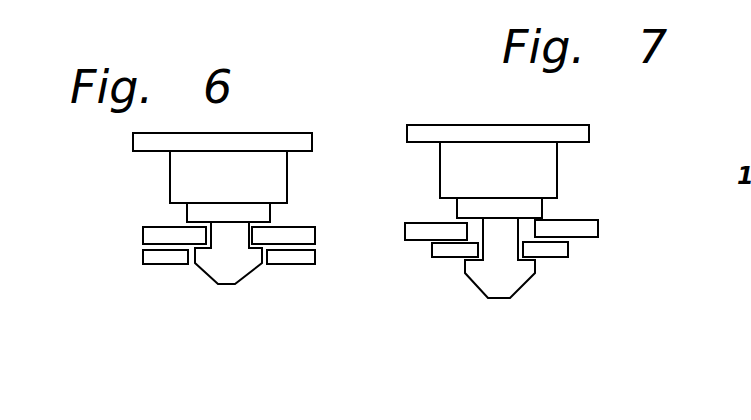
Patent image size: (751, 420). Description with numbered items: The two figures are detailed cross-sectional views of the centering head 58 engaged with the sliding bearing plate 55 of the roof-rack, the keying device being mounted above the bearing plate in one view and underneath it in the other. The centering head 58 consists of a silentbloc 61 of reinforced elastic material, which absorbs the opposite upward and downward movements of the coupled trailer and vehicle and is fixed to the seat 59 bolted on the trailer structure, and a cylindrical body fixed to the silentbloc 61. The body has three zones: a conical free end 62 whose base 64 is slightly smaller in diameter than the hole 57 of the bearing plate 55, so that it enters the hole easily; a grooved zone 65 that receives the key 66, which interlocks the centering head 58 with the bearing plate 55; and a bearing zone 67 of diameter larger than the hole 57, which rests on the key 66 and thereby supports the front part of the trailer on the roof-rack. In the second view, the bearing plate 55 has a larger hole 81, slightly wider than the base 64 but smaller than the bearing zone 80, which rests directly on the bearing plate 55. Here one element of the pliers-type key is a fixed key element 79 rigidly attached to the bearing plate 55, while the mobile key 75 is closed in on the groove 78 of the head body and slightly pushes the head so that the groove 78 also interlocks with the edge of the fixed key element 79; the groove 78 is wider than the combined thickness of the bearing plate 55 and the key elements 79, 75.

In FIG. 6, the centering head 58 is at (248, 103).
In FIG. 7, the centering head 58 is at (482, 102).
In FIG. 6, the seat 59 is at (270, 131).
In FIG. 7, the seat 59 is at (447, 125).
In FIG. 6, the silentbloc 61 is at (253, 173).
In FIG. 7, the silentbloc 61 is at (475, 169).
In FIG. 6, the bearing zone 67 is at (187, 218).
In FIG. 6, the key 66 is at (143, 233).
In FIG. 6, the grooved zone 65 is at (252, 237).
In FIG. 6, the bearing plate 55 is at (159, 265).
In FIG. 7, the bearing plate 55 is at (601, 234).
In FIG. 6, the hole 57 is at (193, 265).
In FIG. 6, the base 64 is at (230, 263).
In FIG. 7, the base 64 is at (498, 272).
In FIG. 6, the free end 62 is at (245, 283).
In FIG. 7, the free end 62 is at (477, 297).
In FIG. 7, the bearing zone 80 is at (500, 202).
In FIG. 7, the groove 78 is at (525, 216).
In FIG. 7, the hole 81 is at (536, 225).
In FIG. 7, the key 75 is at (567, 258).
In FIG. 7, the fixed key element 79 is at (431, 253).